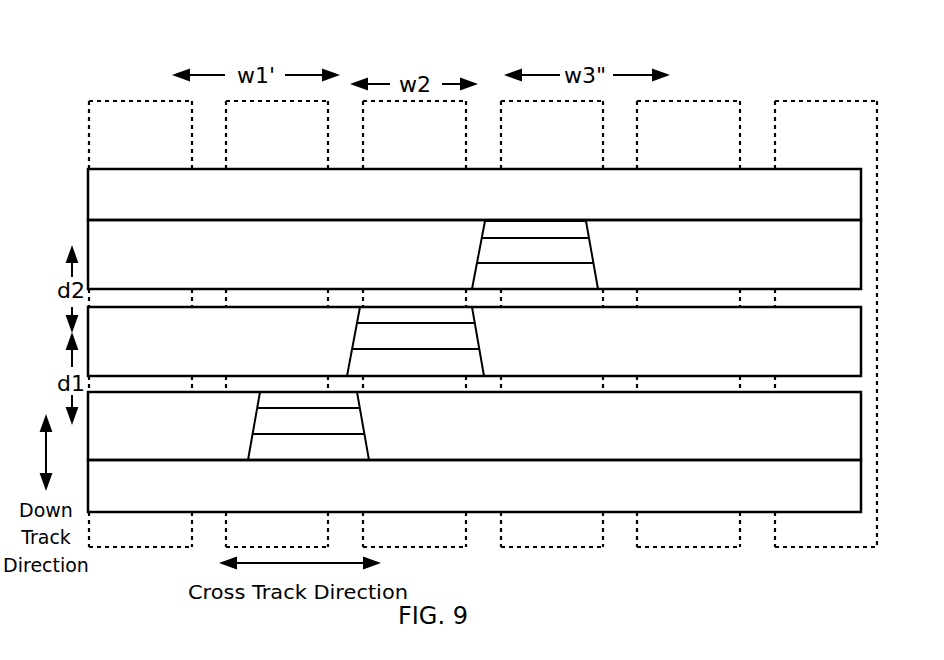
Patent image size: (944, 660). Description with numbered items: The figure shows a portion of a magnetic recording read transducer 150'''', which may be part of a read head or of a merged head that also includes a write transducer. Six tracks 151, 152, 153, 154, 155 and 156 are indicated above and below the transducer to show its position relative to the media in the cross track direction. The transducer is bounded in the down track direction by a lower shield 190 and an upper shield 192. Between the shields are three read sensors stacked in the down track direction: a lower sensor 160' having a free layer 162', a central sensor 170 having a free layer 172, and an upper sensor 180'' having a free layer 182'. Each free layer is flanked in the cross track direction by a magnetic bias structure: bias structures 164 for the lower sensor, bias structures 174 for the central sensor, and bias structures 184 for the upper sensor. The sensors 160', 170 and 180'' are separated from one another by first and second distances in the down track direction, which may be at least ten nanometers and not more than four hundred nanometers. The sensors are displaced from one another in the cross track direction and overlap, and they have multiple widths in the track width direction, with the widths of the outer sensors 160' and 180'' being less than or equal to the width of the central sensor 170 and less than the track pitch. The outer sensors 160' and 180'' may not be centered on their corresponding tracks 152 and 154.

The magnetic recording read transducer 150'''' is at (474, 298).
The track 151 is at (140, 324).
The track 152 is at (277, 324).
The track 153 is at (414, 324).
The track 154 is at (552, 324).
The track 155 is at (688, 324).
The track 156 is at (826, 324).
The shield 192 is at (474, 194).
The bias structure 184 is at (474, 254).
The free layer 182' is at (535, 255).
The read sensor 180'' is at (611, 180).
The bias structure 174 is at (474, 341).
The free layer 172 is at (415, 341).
The read sensor 170 is at (442, 441).
The bias structure 164 is at (474, 426).
The free layer 162' is at (308, 426).
The read sensor 160' is at (245, 484).
The shield 190 is at (474, 486).